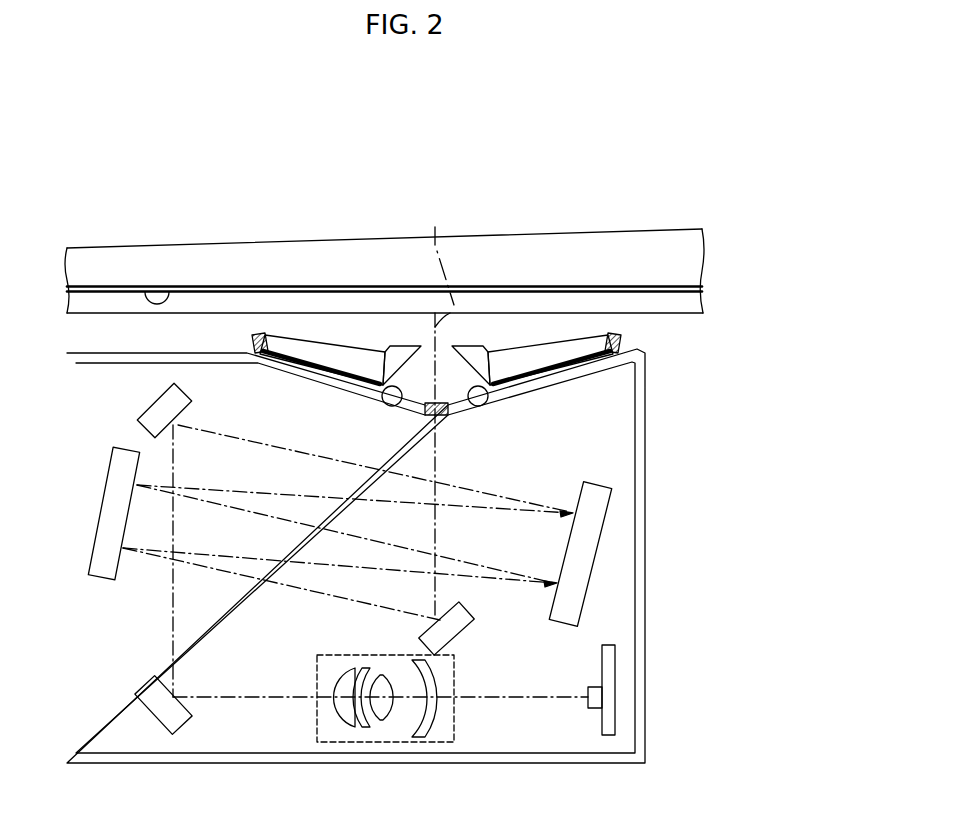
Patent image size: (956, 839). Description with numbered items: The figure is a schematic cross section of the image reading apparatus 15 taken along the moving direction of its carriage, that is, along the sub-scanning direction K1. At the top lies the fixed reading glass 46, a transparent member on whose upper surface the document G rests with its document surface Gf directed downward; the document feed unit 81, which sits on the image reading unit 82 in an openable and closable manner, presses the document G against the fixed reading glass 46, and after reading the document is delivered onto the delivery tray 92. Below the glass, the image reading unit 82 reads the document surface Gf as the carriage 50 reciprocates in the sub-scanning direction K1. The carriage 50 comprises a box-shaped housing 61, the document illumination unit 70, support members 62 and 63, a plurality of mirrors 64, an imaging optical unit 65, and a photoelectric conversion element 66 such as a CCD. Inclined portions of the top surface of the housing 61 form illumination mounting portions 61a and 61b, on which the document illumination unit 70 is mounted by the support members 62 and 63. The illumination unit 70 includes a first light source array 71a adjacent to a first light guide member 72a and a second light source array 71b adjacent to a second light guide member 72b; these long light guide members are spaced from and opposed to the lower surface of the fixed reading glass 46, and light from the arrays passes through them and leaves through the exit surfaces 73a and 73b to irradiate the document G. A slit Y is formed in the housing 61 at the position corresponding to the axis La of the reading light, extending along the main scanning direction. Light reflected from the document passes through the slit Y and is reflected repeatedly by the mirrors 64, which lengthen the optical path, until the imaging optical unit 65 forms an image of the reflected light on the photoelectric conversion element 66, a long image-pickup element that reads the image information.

The document G is at (114, 276).
The document surface Gf is at (167, 291).
The delivery tray 92 is at (655, 229).
The fixed reading glass 46 is at (670, 303).
The axis of reading light La is at (440, 265).
The document feed unit 81 is at (710, 302).
The image reading unit 82 is at (700, 421).
The image reading apparatus 15 is at (770, 330).
The document illumination unit 70 is at (528, 334).
The first light source array 71a is at (252, 340).
The second light source array 71b is at (622, 338).
The first light guide member 72a is at (328, 342).
The second light guide member 72b is at (541, 340).
The exit surface 73a is at (403, 345).
The exit surface 73b is at (468, 345).
The support member 63 is at (250, 353).
The support member 62 is at (625, 350).
The housing 61 is at (647, 512).
The illumination mounting portion 61a is at (397, 405).
The illumination mounting portion 61b is at (468, 408).
The slit Y is at (440, 415).
The carriage 50 is at (658, 470).
The mirrors 64 is at (183, 392).
The imaging optical unit 65 is at (432, 742).
The photoelectric conversion element 66 is at (588, 696).
The sub-scanning direction K1 is at (757, 613).